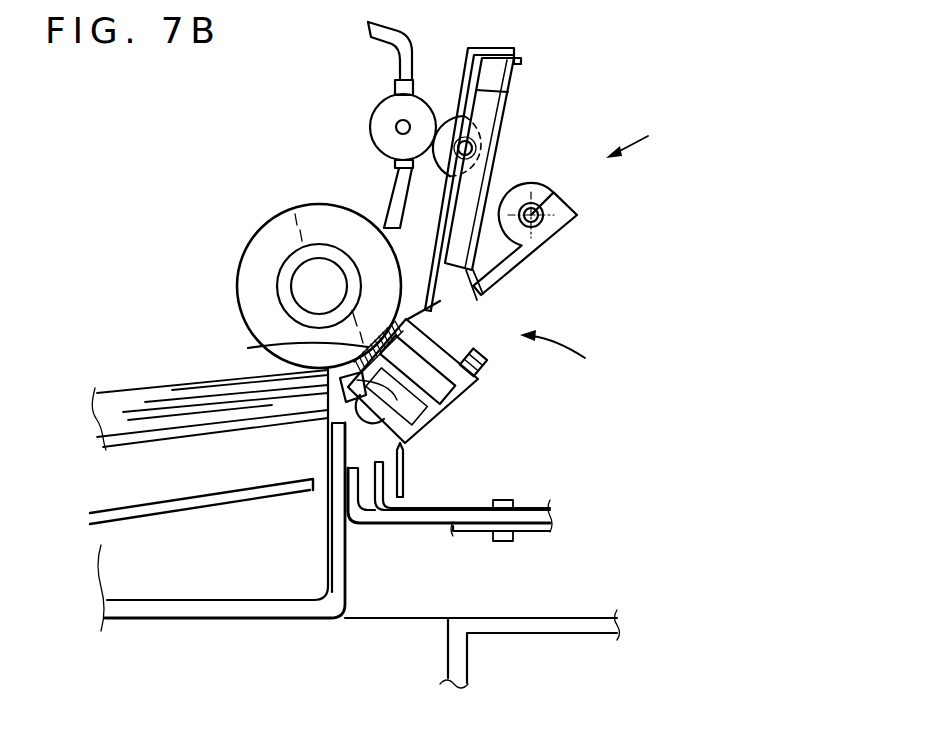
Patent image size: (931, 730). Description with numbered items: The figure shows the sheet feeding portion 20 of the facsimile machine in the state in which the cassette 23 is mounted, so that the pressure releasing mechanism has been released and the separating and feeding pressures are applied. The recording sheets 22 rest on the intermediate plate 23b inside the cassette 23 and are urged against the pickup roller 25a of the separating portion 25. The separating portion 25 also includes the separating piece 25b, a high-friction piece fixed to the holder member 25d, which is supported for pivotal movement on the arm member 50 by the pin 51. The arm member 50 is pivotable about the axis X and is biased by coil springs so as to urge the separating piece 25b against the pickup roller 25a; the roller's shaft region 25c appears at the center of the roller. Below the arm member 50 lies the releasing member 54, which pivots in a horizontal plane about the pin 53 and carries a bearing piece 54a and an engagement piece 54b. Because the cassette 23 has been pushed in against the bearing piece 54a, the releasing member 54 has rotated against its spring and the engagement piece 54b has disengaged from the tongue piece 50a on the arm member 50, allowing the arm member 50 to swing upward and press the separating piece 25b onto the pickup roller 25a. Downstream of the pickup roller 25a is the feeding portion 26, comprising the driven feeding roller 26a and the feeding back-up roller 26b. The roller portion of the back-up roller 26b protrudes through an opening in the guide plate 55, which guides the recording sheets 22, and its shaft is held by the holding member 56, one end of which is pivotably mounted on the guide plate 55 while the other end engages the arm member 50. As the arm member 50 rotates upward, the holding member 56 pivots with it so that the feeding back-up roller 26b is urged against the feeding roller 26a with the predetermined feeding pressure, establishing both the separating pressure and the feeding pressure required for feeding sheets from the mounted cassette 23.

The sheet feeding portion 20 is at (695, 134).
The recording sheet 22 is at (128, 438).
The cassette 23 is at (193, 620).
The intermediate plate 23b is at (176, 506).
The separating portion 25 is at (575, 351).
The pickup roller 25a is at (246, 283).
The separating piece 25b is at (264, 347).
The roller shaft 25c is at (290, 262).
The holder member 25d is at (437, 420).
The feeding portion 26 is at (432, 70).
The feeding roller 26a is at (378, 118).
The feeding back-up roller 26b is at (496, 152).
The arm member 50 is at (533, 250).
The tongue piece 50a is at (406, 466).
The pin 51 is at (477, 379).
The pin 53 is at (510, 500).
The releasing member 54 is at (407, 526).
The bearing piece 54a is at (345, 512).
The engagement piece 54b is at (397, 503).
The guide plate 55 is at (490, 50).
The holding member 56 is at (504, 110).
The axis X is at (556, 192).